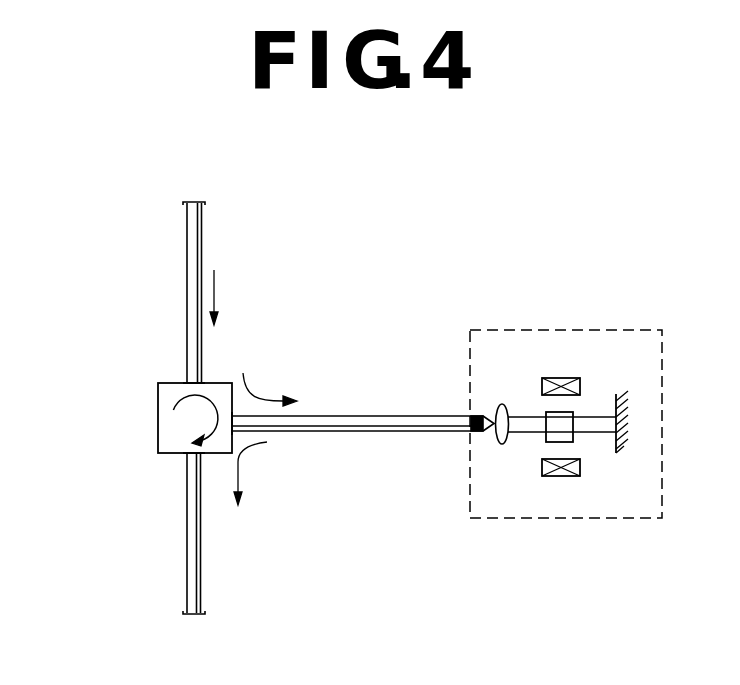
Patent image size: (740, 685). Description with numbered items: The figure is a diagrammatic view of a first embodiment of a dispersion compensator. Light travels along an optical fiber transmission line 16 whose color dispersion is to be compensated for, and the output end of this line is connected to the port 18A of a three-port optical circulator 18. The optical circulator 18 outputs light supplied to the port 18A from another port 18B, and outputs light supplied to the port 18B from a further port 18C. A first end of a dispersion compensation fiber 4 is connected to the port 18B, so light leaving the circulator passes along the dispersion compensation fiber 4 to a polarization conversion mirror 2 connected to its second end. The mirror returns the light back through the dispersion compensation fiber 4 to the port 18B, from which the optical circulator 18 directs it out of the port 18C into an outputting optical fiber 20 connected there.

The polarization conversion mirror 2 is at (555, 328).
The dispersion compensation fiber 4 is at (384, 416).
The optical fiber transmission line 16 is at (187, 236).
The optical circulator 18 is at (160, 423).
The port 18A is at (183, 382).
The port 18B is at (235, 430).
The port 18C is at (183, 457).
The outputting optical fiber 20 is at (188, 578).